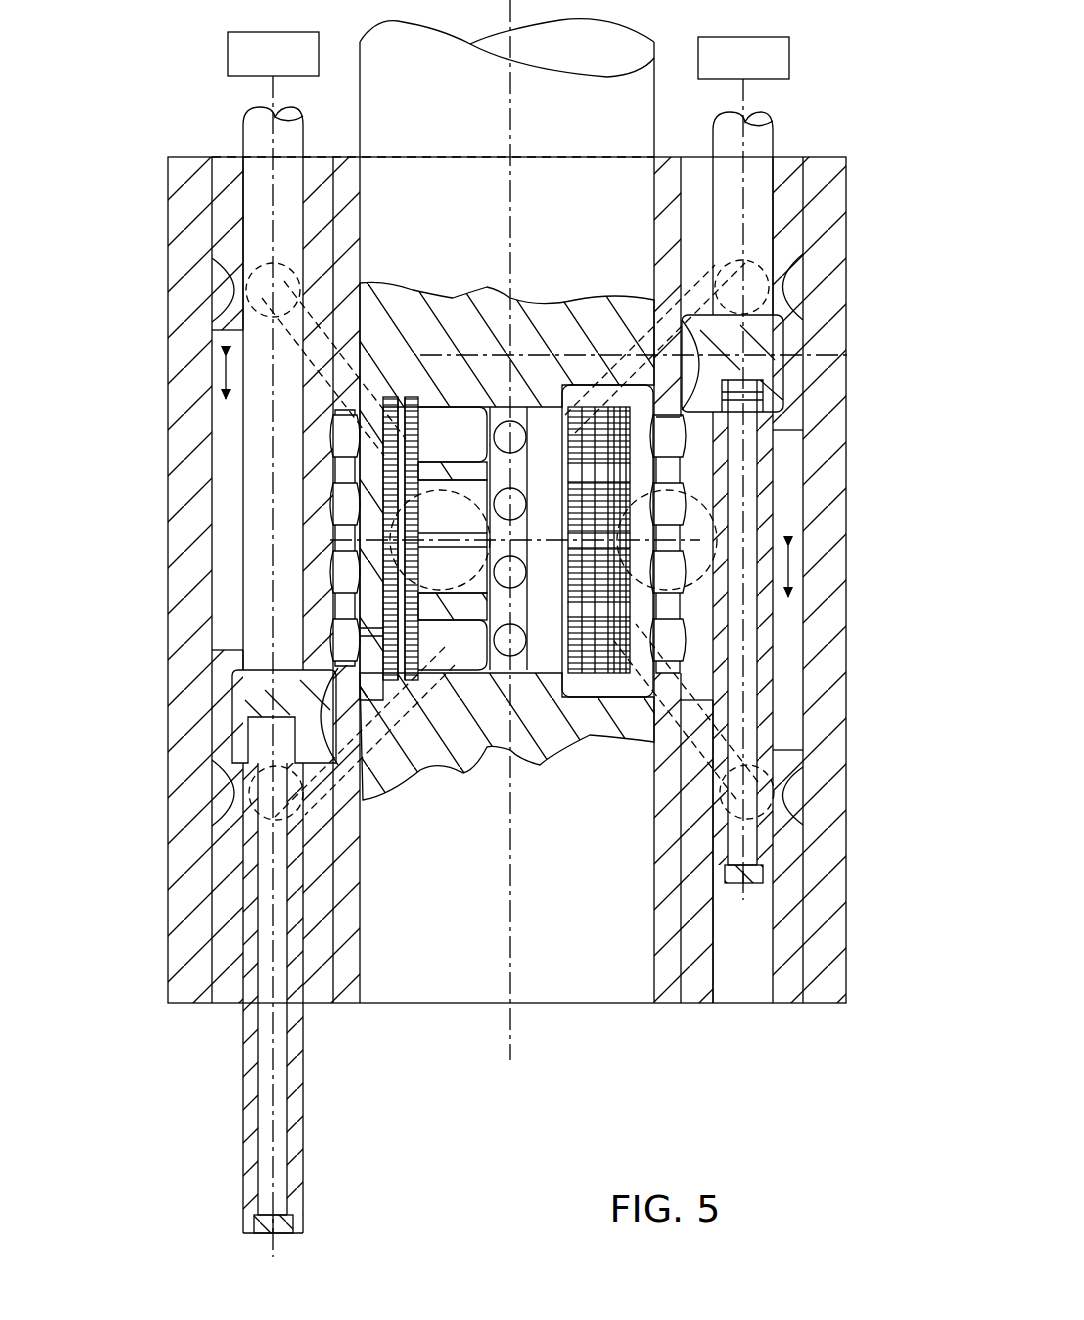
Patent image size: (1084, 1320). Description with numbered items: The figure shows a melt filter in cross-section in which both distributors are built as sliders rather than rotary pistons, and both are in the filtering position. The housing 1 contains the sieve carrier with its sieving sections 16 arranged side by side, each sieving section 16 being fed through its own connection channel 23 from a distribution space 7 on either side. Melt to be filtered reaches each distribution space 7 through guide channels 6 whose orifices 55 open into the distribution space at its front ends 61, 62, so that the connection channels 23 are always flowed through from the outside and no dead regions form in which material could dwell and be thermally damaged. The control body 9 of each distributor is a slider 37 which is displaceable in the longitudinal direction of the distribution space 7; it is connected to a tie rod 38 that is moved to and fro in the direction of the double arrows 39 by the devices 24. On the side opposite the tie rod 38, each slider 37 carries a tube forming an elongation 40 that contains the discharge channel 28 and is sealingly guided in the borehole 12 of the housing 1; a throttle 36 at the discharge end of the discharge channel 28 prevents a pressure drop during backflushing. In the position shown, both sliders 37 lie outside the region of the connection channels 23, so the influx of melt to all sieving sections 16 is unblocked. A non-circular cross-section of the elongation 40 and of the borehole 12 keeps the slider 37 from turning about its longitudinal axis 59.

The housing 1 is at (850, 827).
The guide channels 6 is at (362, 812).
The distribution space 7 is at (228, 503).
The control body 9 is at (238, 694).
The borehole 12 is at (245, 900).
The sieving sections 16 is at (385, 443).
The connection channels 23 is at (343, 573).
The devices 24 is at (270, 60).
The discharge channel 28 is at (266, 1064).
The throttle 36 is at (296, 1226).
The slider 37 is at (372, 632).
The tie rods 38 is at (262, 132).
The double arrows 39 is at (214, 382).
The elongation 40 is at (258, 845).
The orifices 55 is at (262, 272).
The longitudinal axis 59 is at (270, 1133).
The front end 61 is at (226, 318).
The front end 62 is at (218, 762).